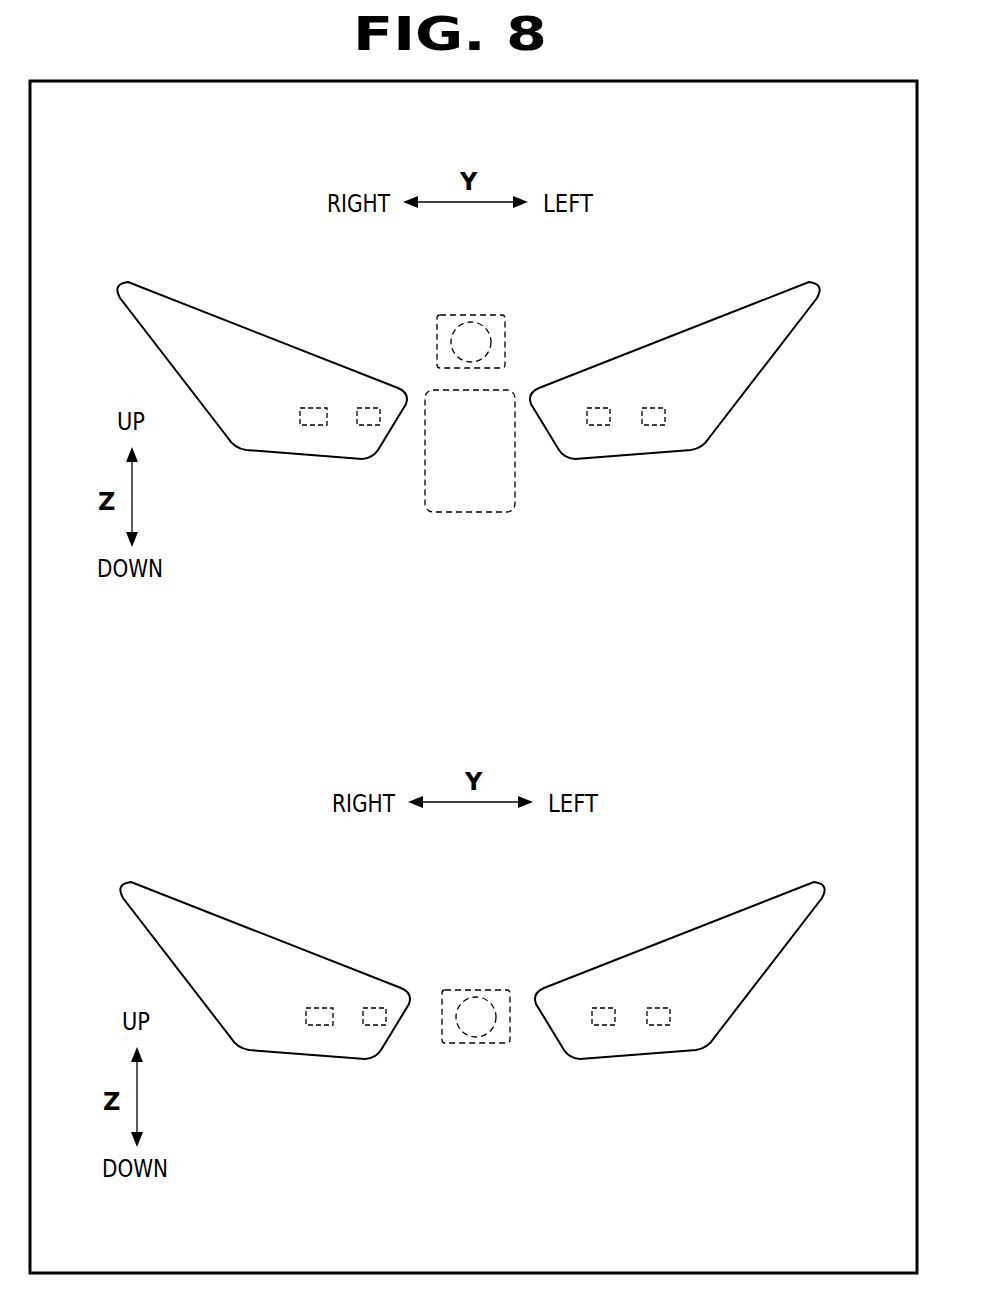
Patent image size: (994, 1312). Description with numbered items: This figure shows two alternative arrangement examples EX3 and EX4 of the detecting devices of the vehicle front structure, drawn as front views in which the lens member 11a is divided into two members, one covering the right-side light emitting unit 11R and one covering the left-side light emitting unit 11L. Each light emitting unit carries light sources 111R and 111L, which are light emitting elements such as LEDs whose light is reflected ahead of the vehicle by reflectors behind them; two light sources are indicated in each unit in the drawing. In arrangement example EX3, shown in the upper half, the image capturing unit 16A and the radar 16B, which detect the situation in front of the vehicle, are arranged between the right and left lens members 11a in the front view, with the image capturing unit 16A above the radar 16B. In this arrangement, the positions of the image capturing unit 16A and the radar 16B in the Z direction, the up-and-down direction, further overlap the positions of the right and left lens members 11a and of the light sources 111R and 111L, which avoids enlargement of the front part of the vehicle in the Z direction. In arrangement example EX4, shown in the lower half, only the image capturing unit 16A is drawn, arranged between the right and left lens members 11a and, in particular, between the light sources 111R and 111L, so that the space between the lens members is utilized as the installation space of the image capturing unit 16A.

The right-side light emitting unit 11R is at (265, 322).
The left-side light emitting unit 11L is at (674, 305).
The lens member 11a is at (242, 448).
The light source 111R is at (313, 425).
The light source 111L is at (598, 425).
The image capturing unit 16A is at (437, 322).
The radar 16B is at (470, 512).
The arrangement example EX3 is at (738, 592).
The arrangement example EX4 is at (768, 1160).